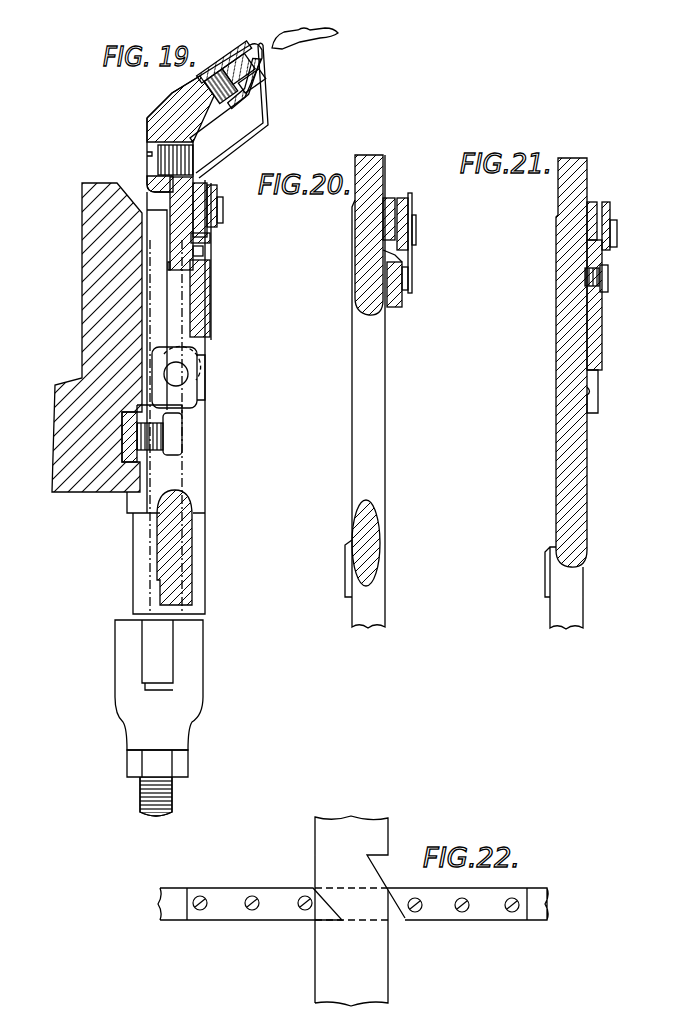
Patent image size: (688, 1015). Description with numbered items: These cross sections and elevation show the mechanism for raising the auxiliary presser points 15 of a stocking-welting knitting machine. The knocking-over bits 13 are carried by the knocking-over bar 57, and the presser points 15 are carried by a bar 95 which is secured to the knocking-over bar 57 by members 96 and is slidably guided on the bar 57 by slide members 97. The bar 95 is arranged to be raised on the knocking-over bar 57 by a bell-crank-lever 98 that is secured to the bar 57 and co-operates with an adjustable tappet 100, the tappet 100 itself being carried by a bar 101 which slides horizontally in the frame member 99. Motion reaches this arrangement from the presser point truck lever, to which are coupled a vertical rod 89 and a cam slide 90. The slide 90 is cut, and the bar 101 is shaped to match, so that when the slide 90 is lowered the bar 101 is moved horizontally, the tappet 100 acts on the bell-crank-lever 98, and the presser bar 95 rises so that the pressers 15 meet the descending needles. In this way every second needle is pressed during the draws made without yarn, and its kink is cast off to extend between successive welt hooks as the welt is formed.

In FIG. 19, the knocking-over bits 13 is at (328, 33).
In FIG. 19, the presser bit 15 is at (268, 93).
In FIG. 19, the knocking-over bar 57 is at (167, 112).
In FIG. 20, the knocking-over bar 57 is at (377, 393).
In FIG. 21, the knocking-over bar 57 is at (568, 457).
In FIG. 19, the vertical rod 89 is at (172, 790).
In FIG. 19, the cam slide 90 is at (140, 540).
In FIG. 22, the cam slide 90 is at (375, 947).
In FIG. 19, the presser point bar 95 is at (210, 234).
In FIG. 20, the presser point bar 95 is at (400, 200).
In FIG. 21, the presser point bar 95 is at (604, 200).
In FIG. 20, the securing members 96 is at (412, 205).
In FIG. 19, the slide members 97 is at (213, 283).
In FIG. 21, the slide members 97 is at (597, 323).
In FIG. 19, the bell-crank-lever 98 is at (197, 353).
In FIG. 19, the frame member 99 is at (102, 255).
In FIG. 19, the adjustable tappet 100 is at (195, 378).
In FIG. 19, the slidable bar 101 is at (110, 473).
In FIG. 22, the slidable bar 101 is at (225, 908).